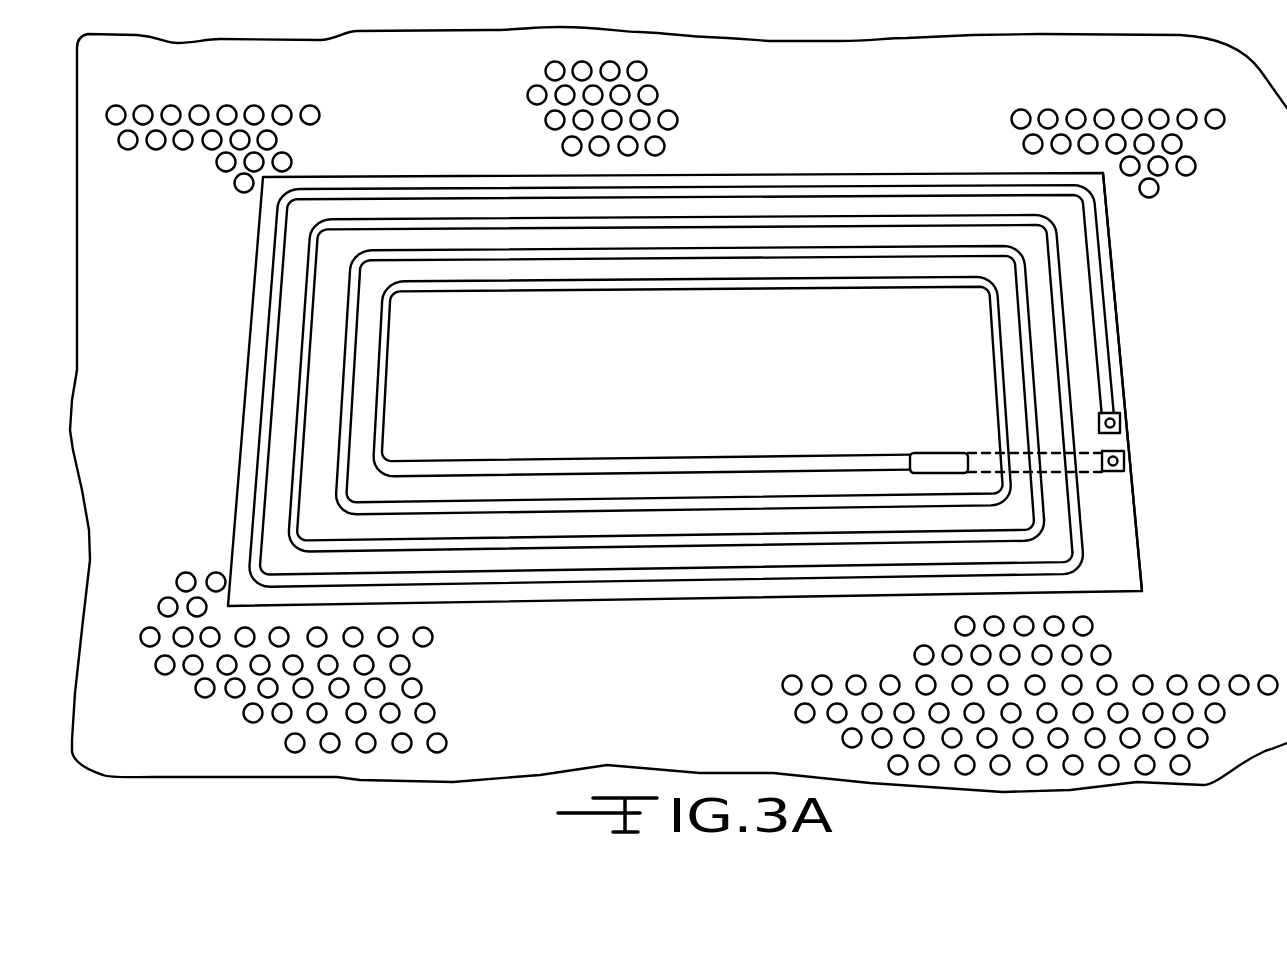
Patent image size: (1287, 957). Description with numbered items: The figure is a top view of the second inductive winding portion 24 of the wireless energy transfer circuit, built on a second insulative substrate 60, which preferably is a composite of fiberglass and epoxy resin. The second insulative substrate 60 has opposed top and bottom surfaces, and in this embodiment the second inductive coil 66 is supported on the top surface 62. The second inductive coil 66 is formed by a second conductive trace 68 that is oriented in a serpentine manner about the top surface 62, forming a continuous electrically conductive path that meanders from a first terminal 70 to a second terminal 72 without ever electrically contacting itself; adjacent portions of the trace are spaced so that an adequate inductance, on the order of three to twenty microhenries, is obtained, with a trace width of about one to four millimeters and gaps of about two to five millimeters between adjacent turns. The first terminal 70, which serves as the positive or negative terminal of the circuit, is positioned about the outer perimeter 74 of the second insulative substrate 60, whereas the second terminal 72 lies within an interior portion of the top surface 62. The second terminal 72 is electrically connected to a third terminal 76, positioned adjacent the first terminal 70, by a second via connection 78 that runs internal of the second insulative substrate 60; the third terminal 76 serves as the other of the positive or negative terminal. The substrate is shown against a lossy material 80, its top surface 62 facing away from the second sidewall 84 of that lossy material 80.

The second inductive winding portion 24 is at (625, 335).
The second insulative substrate 60 is at (1117, 552).
The second insulative substrate top surface 62 is at (1112, 509).
The second inductive coil 66 is at (347, 219).
The second conductive trace 68 is at (348, 375).
The second insulative substrate first terminal 70 is at (1118, 420).
The second insulative substrate second terminal 72 is at (927, 452).
The outer perimeter 74 is at (1117, 307).
The second insulative substrate third terminal 76 is at (1123, 459).
The second via connection 78 is at (1021, 452).
The lossy material 80 is at (132, 757).
The second sidewall 84 is at (575, 707).